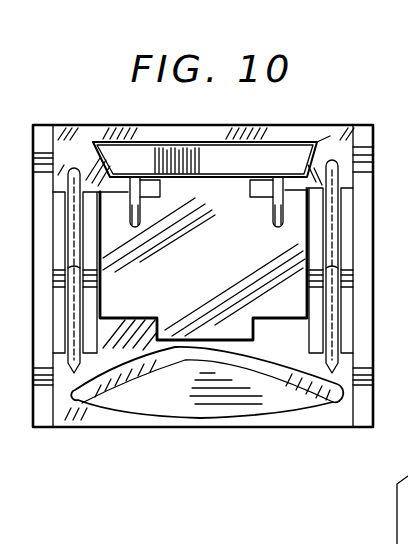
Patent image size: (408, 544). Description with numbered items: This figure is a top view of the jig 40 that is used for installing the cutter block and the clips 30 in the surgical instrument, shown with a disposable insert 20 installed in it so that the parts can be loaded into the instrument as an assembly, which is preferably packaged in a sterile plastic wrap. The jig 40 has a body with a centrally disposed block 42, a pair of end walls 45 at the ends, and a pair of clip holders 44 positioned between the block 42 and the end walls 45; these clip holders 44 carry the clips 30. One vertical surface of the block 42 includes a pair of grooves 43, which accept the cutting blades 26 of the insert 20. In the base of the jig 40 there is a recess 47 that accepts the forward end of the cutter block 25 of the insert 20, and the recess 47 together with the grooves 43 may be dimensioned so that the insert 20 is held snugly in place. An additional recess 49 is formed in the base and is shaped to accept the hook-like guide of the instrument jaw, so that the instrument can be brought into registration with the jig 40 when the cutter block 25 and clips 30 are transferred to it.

The disposable insert 20 is at (300, 142).
The block 25 is at (212, 160).
The cutting blades 26 is at (160, 188).
The clips 30 is at (77, 317).
The jig 40 is at (77, 439).
The block 42 is at (208, 283).
The grooves 43 is at (152, 222).
The clip holders 44 is at (66, 178).
The end walls 45 is at (381, 510).
The recess 47 is at (178, 140).
The recess 49 is at (166, 384).